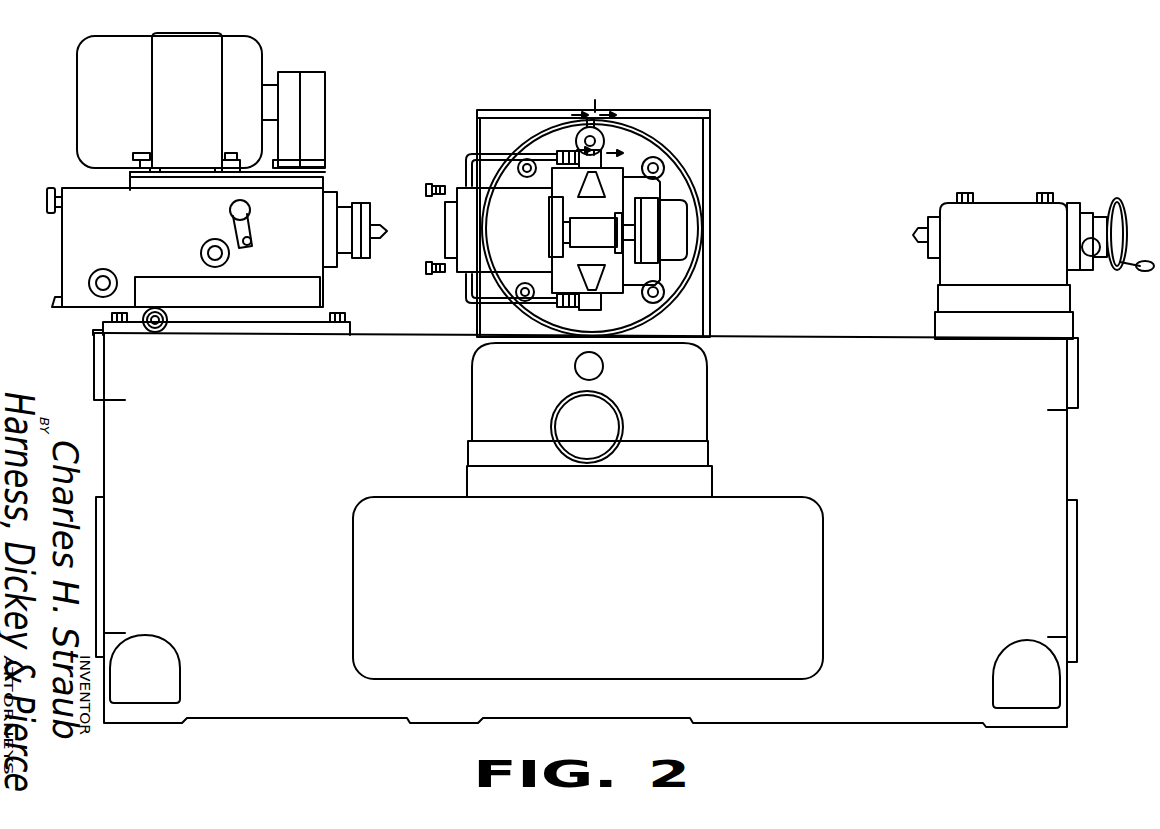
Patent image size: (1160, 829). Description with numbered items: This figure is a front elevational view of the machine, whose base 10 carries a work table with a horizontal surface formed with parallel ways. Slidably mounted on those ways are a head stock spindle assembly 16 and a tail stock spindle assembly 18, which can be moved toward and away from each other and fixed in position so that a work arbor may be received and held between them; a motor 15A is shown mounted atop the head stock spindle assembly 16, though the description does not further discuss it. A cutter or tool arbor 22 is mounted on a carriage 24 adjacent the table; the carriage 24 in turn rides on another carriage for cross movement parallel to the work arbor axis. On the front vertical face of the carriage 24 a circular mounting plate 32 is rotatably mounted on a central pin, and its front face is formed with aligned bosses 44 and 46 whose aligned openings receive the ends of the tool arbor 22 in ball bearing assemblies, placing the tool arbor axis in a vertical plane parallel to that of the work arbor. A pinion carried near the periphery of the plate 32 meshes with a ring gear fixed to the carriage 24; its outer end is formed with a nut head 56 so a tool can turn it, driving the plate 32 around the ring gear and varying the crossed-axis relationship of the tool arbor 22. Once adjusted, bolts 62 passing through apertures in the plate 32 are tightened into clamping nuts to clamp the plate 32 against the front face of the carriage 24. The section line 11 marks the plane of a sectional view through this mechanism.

The base 10 is at (1045, 470).
The drive motor 15A is at (200, 122).
The head stock spindle assembly 16 is at (340, 207).
The tail stock spindle assembly 18 is at (930, 216).
The tool arbor 22 is at (577, 228).
The carriage 24 is at (693, 148).
The circular mounting plate 32 is at (653, 153).
The boss 44 is at (468, 236).
The boss 46 is at (673, 213).
The nut head 56 is at (596, 137).
The bolts 62 is at (662, 170).
The section line 11- 11 is at (622, 115).